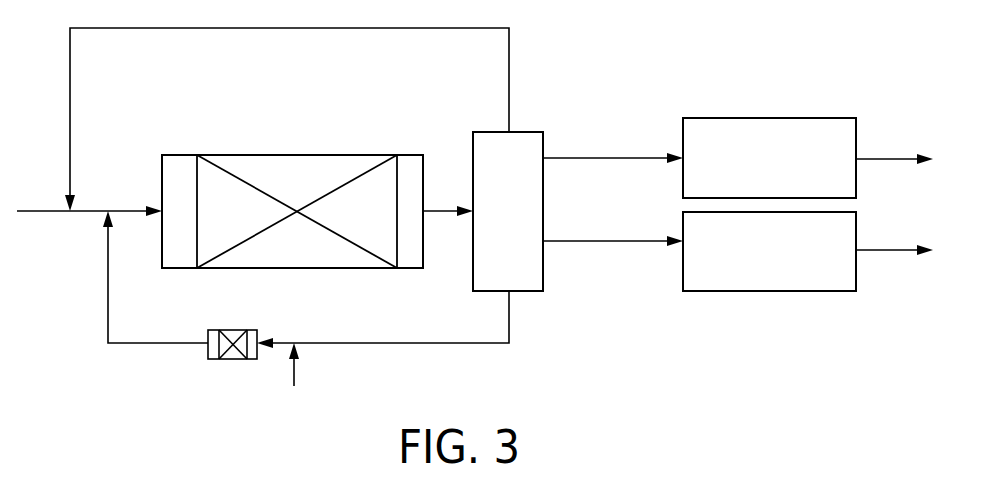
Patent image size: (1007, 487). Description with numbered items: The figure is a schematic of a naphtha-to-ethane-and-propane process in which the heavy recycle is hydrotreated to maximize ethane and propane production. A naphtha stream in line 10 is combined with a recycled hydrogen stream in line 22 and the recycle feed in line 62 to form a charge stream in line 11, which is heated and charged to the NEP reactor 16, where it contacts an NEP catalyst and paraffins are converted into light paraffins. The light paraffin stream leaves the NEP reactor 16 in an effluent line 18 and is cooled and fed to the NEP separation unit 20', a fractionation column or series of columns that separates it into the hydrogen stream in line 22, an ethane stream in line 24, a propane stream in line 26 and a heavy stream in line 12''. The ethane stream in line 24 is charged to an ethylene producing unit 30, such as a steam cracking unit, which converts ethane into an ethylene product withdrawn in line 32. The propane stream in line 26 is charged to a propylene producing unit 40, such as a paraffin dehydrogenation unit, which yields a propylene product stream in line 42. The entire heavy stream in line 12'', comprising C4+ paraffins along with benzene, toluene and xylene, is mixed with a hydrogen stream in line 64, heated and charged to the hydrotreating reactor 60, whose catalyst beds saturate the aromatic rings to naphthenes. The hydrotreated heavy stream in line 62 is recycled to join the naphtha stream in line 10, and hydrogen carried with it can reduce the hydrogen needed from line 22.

The naphtha stream line 10 is at (60, 214).
The charge stream line 11 is at (130, 215).
The NEP reactor 16 is at (185, 153).
The effluent line 18 is at (452, 209).
The NEP separation unit 20' is at (531, 238).
The hydrogen stream line 22 is at (509, 112).
The ethane stream line 24 is at (606, 157).
The propane stream line 26 is at (606, 240).
The ethylene producing unit 30 is at (760, 118).
The ethylene product stream line 32 is at (906, 159).
The propylene producing unit 40 is at (782, 291).
The propylene product stream line 42 is at (903, 250).
The heavy stream line 12'' is at (383, 319).
The hydrotreating reactor 60 is at (218, 330).
The recycle feed line 62 is at (108, 282).
The hydrogen stream line 64 is at (294, 372).